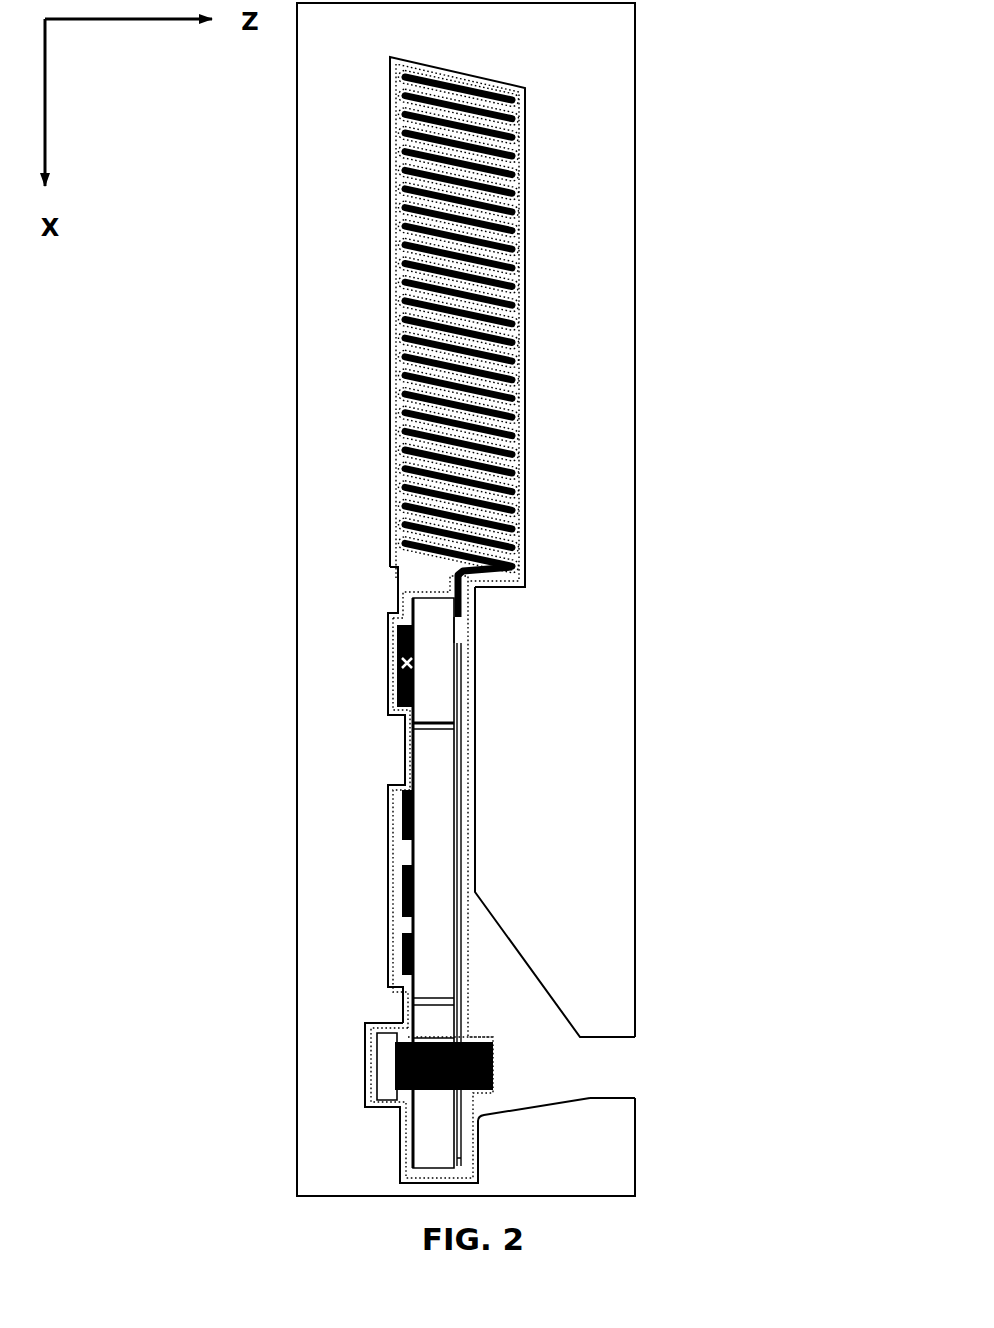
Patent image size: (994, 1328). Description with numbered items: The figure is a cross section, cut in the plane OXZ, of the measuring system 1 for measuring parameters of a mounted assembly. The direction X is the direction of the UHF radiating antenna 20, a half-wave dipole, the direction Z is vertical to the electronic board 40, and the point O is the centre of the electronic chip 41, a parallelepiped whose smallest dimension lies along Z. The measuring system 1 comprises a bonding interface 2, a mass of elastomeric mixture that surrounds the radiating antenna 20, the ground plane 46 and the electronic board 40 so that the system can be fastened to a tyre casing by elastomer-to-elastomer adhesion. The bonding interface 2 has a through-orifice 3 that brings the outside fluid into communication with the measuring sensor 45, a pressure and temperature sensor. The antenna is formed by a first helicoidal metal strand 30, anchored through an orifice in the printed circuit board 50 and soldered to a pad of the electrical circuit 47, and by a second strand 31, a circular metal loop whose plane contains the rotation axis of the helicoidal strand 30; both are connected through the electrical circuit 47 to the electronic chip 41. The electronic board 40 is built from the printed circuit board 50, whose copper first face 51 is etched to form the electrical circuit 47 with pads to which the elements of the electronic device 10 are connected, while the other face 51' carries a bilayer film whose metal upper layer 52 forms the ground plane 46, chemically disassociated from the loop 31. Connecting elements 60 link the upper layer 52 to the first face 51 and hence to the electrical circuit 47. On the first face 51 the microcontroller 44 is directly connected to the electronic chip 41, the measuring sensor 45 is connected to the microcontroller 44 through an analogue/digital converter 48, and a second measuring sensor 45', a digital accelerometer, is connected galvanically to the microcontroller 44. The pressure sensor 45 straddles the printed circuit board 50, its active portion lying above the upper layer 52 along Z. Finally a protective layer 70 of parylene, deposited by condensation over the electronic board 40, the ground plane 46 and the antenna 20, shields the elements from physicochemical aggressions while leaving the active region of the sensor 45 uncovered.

The measuring system 1 is at (517, 599).
The bonding interface 2 is at (615, 654).
The through-orifice 3 is at (617, 1070).
The electronic device 10 is at (356, 632).
The UHF radiating antenna 20 is at (560, 586).
The first helicoidal metal strand 30 is at (492, 266).
The second strand 31 is at (465, 627).
The electronic board 40 is at (320, 762).
The electronic chip 41 is at (321, 674).
The microcontroller 44 is at (403, 820).
The measuring sensor 45 is at (371, 1066).
The second measuring sensor 45' is at (358, 891).
The ground plane 46 is at (464, 815).
The electrical circuit 47 is at (409, 1003).
The analogue/digital converter 48 is at (403, 950).
The printed circuit board 50 is at (442, 939).
The first face 51 is at (399, 1103).
The other face 51' is at (522, 596).
The upper layer 52 is at (467, 1019).
The connecting elements 60 is at (462, 725).
The protective layer 70 is at (410, 597).
The point O is at (402, 663).